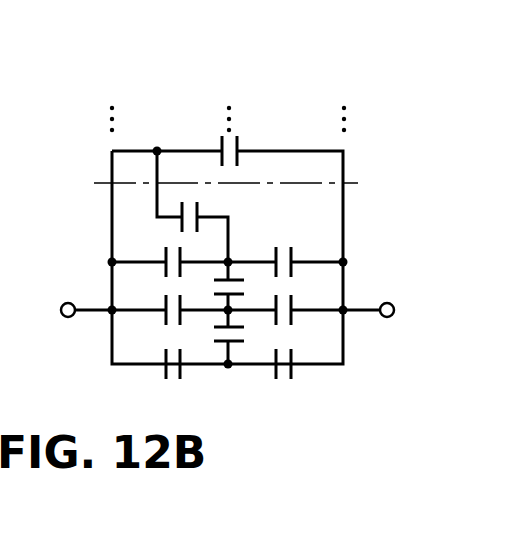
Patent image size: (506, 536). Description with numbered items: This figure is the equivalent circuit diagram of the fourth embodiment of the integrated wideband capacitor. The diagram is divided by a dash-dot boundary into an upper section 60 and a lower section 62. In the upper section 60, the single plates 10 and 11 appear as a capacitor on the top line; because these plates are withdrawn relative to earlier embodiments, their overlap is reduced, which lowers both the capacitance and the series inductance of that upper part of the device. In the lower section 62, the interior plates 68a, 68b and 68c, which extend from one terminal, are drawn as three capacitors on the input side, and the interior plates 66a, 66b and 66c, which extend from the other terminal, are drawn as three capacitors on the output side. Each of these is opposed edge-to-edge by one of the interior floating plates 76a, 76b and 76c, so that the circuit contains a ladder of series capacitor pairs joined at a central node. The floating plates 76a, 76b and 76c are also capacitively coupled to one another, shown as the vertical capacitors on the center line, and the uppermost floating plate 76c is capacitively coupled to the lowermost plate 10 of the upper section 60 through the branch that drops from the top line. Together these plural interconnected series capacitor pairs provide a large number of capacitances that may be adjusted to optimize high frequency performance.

The single plate 10 is at (142, 151).
The single plate 11 is at (270, 151).
The upper section 60 is at (11, 64).
The lower section 62 is at (179, 192).
The interior plate 68a is at (122, 364).
The interior plate 68b is at (130, 318).
The interior plate 68c is at (128, 256).
The interior floating plate 76a is at (224, 364).
The interior floating plate 76b is at (236, 306).
The interior floating plate 76c is at (232, 258).
The interior plate 66a is at (322, 364).
The interior plate 66b is at (324, 322).
The interior plate 66c is at (328, 262).